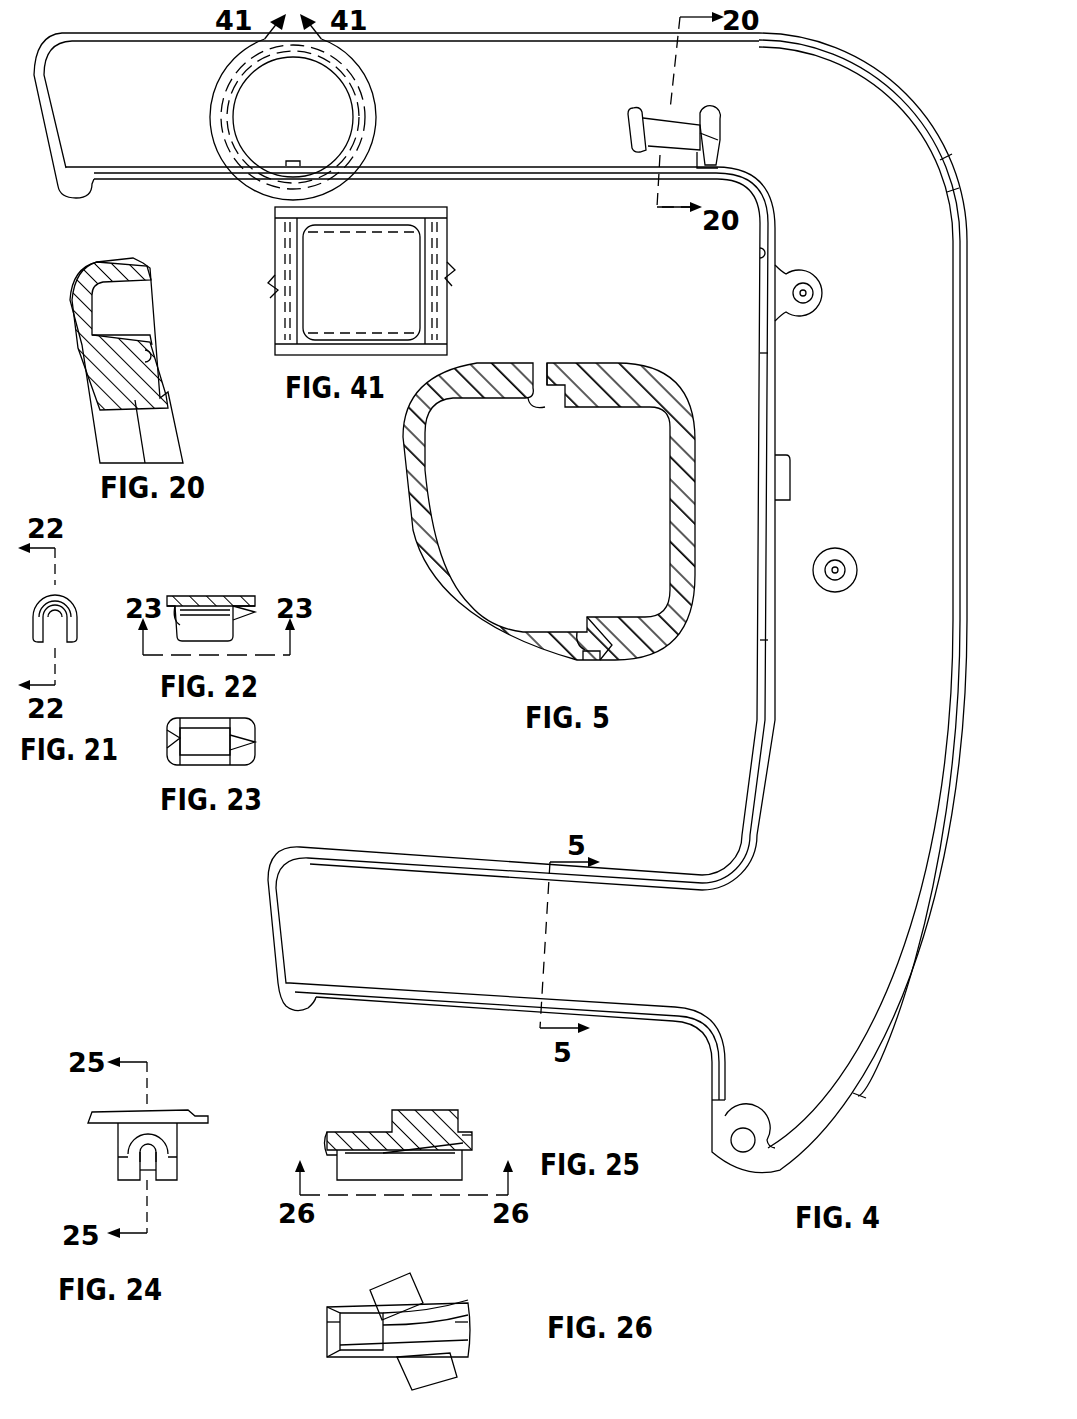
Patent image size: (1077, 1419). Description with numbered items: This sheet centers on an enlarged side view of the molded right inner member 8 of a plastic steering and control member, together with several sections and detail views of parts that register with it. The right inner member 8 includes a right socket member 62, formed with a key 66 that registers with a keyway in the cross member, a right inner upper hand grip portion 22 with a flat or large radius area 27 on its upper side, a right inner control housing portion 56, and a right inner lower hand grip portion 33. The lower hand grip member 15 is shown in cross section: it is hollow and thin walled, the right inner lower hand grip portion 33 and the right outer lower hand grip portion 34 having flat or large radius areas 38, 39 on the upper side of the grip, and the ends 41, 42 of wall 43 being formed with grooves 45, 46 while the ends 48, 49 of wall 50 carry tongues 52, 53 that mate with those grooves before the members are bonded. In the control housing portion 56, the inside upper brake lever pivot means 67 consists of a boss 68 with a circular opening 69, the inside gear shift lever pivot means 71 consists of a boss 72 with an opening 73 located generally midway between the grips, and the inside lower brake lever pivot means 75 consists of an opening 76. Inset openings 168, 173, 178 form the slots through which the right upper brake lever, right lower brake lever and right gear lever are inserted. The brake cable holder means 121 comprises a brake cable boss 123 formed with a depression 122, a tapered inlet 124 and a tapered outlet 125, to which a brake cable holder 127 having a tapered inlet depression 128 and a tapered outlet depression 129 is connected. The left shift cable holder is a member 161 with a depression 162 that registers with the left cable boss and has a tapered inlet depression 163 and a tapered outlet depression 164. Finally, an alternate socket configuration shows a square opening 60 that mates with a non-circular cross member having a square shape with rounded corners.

In FIG. 4, the right inner member 8 is at (268, 877).
In FIG. 5, the lower hand grip member 15 is at (650, 372).
In FIG. 4, the right inner upper hand grip portion 22 is at (517, 182).
In FIG. 20, the right inner upper hand grip portion 22 is at (103, 398).
In FIG. 4, the flat or large radius area 27 is at (480, 35).
In FIG. 20, the flat or large radius area 27 is at (112, 262).
In FIG. 4, the right inner lower hand grip portion 33 is at (440, 1016).
In FIG. 5, the right inner lower hand grip portion 33 is at (462, 612).
In FIG. 5, the right outer lower hand grip portion 34 is at (694, 485).
In FIG. 4, the flat or large radius area 38 is at (492, 857).
In FIG. 5, the flat or large radius area 38 is at (573, 363).
In FIG. 5, the flat or large radius area 39 is at (515, 363).
In FIG. 5, the end of wall 41 is at (602, 630).
In FIG. 5, the end of wall 42 is at (583, 408).
In FIG. 5, the wall 43 is at (672, 518).
In FIG. 5, the groove 45 is at (550, 640).
In FIG. 5, the groove 46 is at (522, 400).
In FIG. 5, the end of wall 48 is at (555, 660).
In FIG. 5, the end of wall 49 is at (497, 396).
In FIG. 5, the wall 50 is at (420, 512).
In FIG. 5, the tongue 52 is at (602, 660).
In FIG. 5, the tongue 53 is at (553, 385).
In FIG. 4, the right inner control housing portion 56 is at (955, 620).
In FIG. 41, the square opening 60 is at (310, 295).
In FIG. 4, the right socket member 62 is at (367, 78).
In FIG. 4, the key 66 is at (292, 160).
In FIG. 4, the inside upper brake lever pivot means 67 is at (818, 274).
In FIG. 4, the boss 68 is at (815, 295).
In FIG. 4, the circular opening 69 is at (803, 300).
In FIG. 4, the inside gear shift lever pivot means 71 is at (848, 548).
In FIG. 4, the boss 72 is at (855, 570).
In FIG. 4, the opening 73 is at (840, 580).
In FIG. 4, the inside lower brake lever pivot means 75 is at (760, 1118).
In FIG. 4, the opening 76 is at (745, 1153).
In FIG. 4, the brake cable holder means 121 is at (712, 114).
In FIG. 20, the brake cable holder means 121 is at (118, 325).
In FIG. 4, the depression 122 is at (655, 120).
In FIG. 20, the depression 122 is at (150, 355).
In FIG. 4, the brake cable boss 123 is at (720, 160).
In FIG. 20, the brake cable boss 123 is at (100, 345).
In FIG. 4, the tapered inlet 124 is at (722, 122).
In FIG. 4, the tapered outlet 125 is at (633, 122).
In FIG. 21, the brake cable holder 127 is at (68, 598).
In FIG. 22, the brake cable holder 127 is at (205, 595).
In FIG. 23, the brake cable holder 127 is at (250, 720).
In FIG. 22, the tapered inlet depression 128 is at (260, 612).
In FIG. 23, the tapered inlet depression 128 is at (258, 748).
In FIG. 22, the tapered outlet depression 129 is at (180, 598).
In FIG. 23, the tapered outlet depression 129 is at (167, 740).
In FIG. 24, the member 161 is at (170, 1110).
In FIG. 25, the member 161 is at (355, 1150).
In FIG. 26, the member 161 is at (355, 1310).
In FIG. 24, the depression 162 is at (155, 1180).
In FIG. 25, the depression 162 is at (355, 1152).
In FIG. 26, the depression 162 is at (380, 1320).
In FIG. 25, the tapered inlet depression 163 is at (462, 1160).
In FIG. 26, the tapered inlet depression 163 is at (460, 1325).
In FIG. 24, the tapered outlet depression 164 is at (135, 1155).
In FIG. 25, the tapered outlet depression 164 is at (327, 1148).
In FIG. 26, the tapered outlet depression 164 is at (327, 1322).
In FIG. 4, the inset opening 168 is at (760, 253).
In FIG. 4, the inset opening 173 is at (840, 1128).
In FIG. 4, the inset opening 178 is at (765, 582).